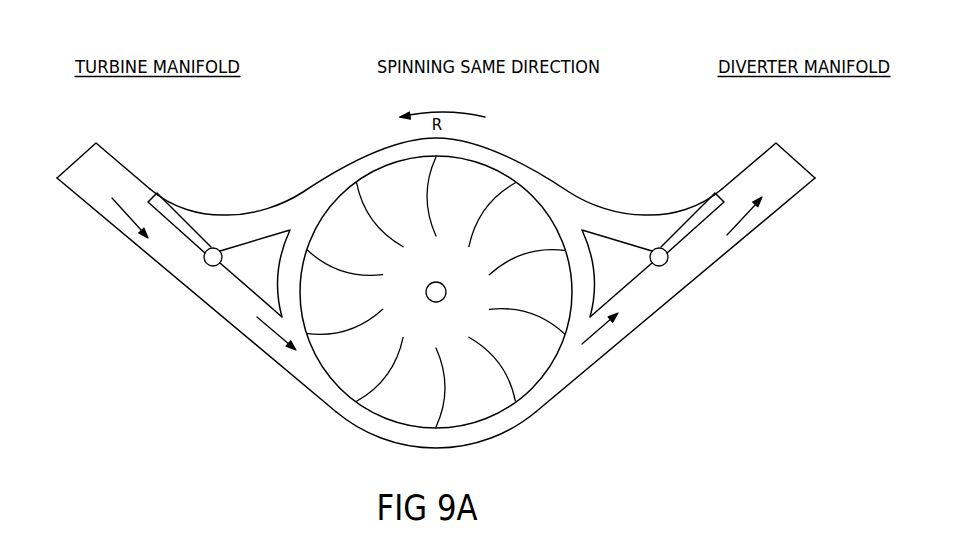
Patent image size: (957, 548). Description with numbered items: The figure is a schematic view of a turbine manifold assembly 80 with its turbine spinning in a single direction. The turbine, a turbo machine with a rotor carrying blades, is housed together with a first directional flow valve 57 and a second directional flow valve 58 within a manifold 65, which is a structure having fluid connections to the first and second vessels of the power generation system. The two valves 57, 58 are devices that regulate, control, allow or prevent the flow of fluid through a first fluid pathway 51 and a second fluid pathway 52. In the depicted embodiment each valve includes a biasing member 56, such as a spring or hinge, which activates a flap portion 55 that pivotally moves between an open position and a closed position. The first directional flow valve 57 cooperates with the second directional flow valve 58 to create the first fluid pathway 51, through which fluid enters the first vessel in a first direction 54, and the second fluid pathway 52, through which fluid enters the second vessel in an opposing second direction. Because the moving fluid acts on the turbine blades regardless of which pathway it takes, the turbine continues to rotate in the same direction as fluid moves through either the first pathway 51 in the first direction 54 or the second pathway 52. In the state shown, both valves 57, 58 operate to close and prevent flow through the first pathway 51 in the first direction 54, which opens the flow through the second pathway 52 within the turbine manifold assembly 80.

The turbine manifold assembly 80 is at (307, 97).
The first fluid pathway 51 is at (242, 315).
The second fluid pathway 52 is at (248, 223).
The first direction 54 is at (278, 330).
The flap portion 55 is at (185, 233).
The biasing member 56 is at (205, 266).
The first directional flow valve 57 is at (157, 248).
The second directional flow valve 58 is at (667, 225).
The manifold 65 is at (225, 213).